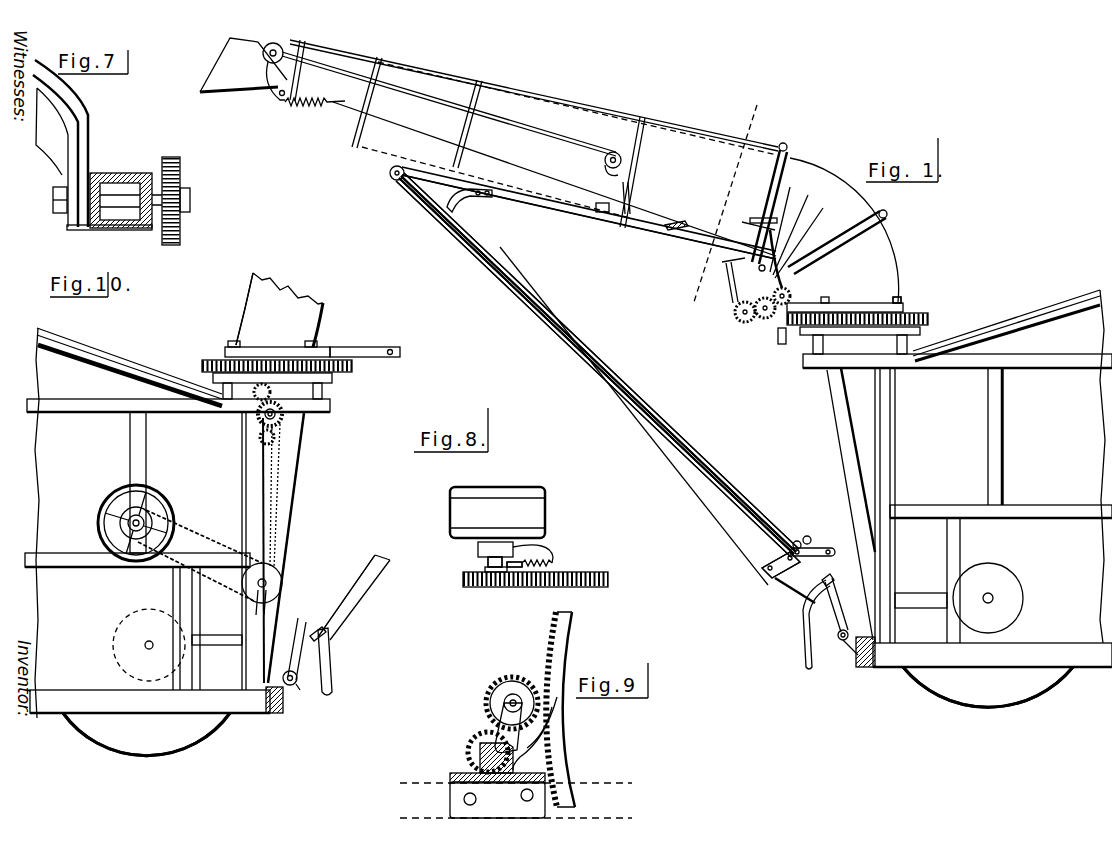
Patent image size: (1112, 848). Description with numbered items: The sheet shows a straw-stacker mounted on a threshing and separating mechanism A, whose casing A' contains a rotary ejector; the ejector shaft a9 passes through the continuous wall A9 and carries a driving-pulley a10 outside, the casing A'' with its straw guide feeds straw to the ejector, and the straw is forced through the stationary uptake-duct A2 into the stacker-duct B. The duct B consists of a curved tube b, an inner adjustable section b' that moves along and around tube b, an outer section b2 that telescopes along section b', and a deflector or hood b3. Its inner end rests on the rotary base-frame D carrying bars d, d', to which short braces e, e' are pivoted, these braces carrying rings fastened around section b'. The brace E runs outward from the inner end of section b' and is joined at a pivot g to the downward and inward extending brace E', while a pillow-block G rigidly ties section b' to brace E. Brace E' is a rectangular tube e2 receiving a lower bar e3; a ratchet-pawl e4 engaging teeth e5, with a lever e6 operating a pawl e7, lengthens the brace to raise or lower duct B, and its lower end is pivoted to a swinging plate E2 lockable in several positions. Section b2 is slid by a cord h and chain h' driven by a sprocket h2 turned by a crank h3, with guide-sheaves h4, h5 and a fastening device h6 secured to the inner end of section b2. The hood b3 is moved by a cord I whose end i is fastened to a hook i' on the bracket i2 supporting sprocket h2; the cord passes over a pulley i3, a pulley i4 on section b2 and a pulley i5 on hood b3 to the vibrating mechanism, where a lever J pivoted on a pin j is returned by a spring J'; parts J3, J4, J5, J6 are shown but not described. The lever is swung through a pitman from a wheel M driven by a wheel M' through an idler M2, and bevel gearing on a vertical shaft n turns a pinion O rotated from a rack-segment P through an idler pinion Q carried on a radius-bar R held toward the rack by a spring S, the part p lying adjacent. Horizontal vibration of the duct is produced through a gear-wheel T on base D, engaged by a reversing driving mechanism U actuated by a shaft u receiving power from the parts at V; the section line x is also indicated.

In FIG. 10, the threshing and separating mechanism A is at (167, 523).
In FIG. 1, the threshing and separating mechanism A is at (957, 454).
In FIG. 10, the ejector casing A' is at (146, 734).
In FIG. 1, the ejector casing A' is at (988, 700).
In FIG. 10, the casing A'' is at (150, 640).
In FIG. 1, the casing A'' is at (992, 553).
In FIG. 10, the uptake-duct A2 is at (296, 488).
In FIG. 1, the uptake-duct A2 is at (862, 472).
In FIG. 10, the continuous wall A9 is at (133, 740).
In FIG. 1, the continuous wall A9 is at (1033, 680).
In FIG. 1, the shaft a9 is at (994, 600).
In FIG. 1, the driving-pulley a10 is at (1024, 608).
In FIG. 10, the stacking tube or duct B is at (279, 298).
In FIG. 1, the stacking tube or duct B is at (640, 115).
In FIG. 10, the tube b is at (240, 307).
In FIG. 1, the tube b is at (850, 230).
In FIG. 1, the inner adjustable tube-section b' is at (782, 201).
In FIG. 1, the outer adjustable tube section b2 is at (560, 108).
In FIG. 1, the deflector or hood b3 is at (272, 75).
In FIG. 10, the rotary base-frame D is at (228, 346).
In FIG. 1, the rotary base-frame D is at (903, 293).
In FIG. 7, the base-frame bar d is at (107, 191).
In FIG. 1, the base-frame bar d is at (845, 298).
In FIG. 10, the base-frame bar d' is at (365, 343).
In FIG. 1, the bar or brace E is at (589, 213).
In FIG. 10, the brace-bar E' is at (354, 597).
In FIG. 1, the brace-bar E' is at (597, 365).
In FIG. 10, the swinging plate E2 is at (292, 706).
In FIG. 1, the swinging plate E2 is at (855, 668).
In FIG. 7, the brace e is at (52, 157).
In FIG. 1, the brace e is at (787, 259).
In FIG. 7, the brace e' is at (72, 143).
In FIG. 1, the brace e' is at (725, 280).
In FIG. 10, the upper tubular part e2 is at (346, 596).
In FIG. 1, the upper tubular part e2 is at (597, 370).
In FIG. 10, the lower member or bar e3 is at (304, 695).
In FIG. 1, the lower member or bar e3 is at (838, 644).
In FIG. 10, the ratchet-pawl e4 is at (318, 625).
In FIG. 1, the ratchet-pawl e4 is at (830, 574).
In FIG. 10, the ratchet-teeth e5 is at (285, 676).
In FIG. 1, the ratchet-teeth e5 is at (846, 628).
In FIG. 10, the lever e6 is at (330, 676).
In FIG. 1, the lever e6 is at (800, 645).
In FIG. 10, the pawl e7 is at (298, 634).
In FIG. 1, the pawl e7 is at (838, 598).
In FIG. 1, the pillow-block G is at (632, 198).
In FIG. 1, the pivot g is at (447, 210).
In FIG. 1, the cord h is at (595, 364).
In FIG. 1, the section of chain h' is at (593, 369).
In FIG. 1, the sprocket h2 is at (758, 568).
In FIG. 1, the crank h3 is at (826, 547).
In FIG. 1, the guide-sheave h4 is at (440, 188).
In FIG. 1, the guide-sheave h5 is at (690, 218).
In FIG. 1, the fastening device h6 is at (603, 201).
In FIG. 1, the cord I is at (508, 80).
In FIG. 1, the cord end i is at (793, 527).
In FIG. 1, the hook i' is at (805, 527).
In FIG. 1, the bracket i2 is at (788, 577).
In FIG. 1, the pulley i3 is at (390, 170).
In FIG. 1, the pulley i4 is at (610, 150).
In FIG. 1, the pulley i5 is at (274, 42).
In FIG. 1, the bar or lever J is at (754, 232).
In FIG. 1, the spring J' is at (837, 242).
In FIG. 1, the arm J3 is at (794, 227).
In FIG. 1, the arm J4 is at (803, 236).
In FIG. 1, the bracket J5 is at (755, 218).
In FIG. 1, the arm J6 is at (784, 222).
In FIG. 1, the short shaft or pin j is at (758, 266).
In FIG. 7, the wheel M is at (185, 201).
In FIG. 1, the wheel M is at (733, 321).
In FIG. 1, the wheel M' is at (794, 293).
In FIG. 1, the idler M2 is at (762, 318).
In FIG. 8, the vertical shaft n is at (488, 560).
In FIG. 8, the pinion O is at (497, 588).
In FIG. 9, the pinion O is at (472, 748).
In FIG. 1, the pinion O is at (780, 343).
In FIG. 10, the rack-segment P is at (332, 380).
In FIG. 8, the rack-segment P is at (535, 569).
In FIG. 9, the rack-segment P is at (562, 657).
In FIG. 1, the rack-segment P is at (928, 322).
In FIG. 1, the support plate p is at (870, 340).
In FIG. 8, the idler or driving-pinion Q is at (531, 588).
In FIG. 9, the idler or driving-pinion Q is at (495, 683).
In FIG. 8, the radius-bar R is at (480, 588).
In FIG. 9, the radius-bar R is at (508, 718).
In FIG. 8, the spring S is at (553, 553).
In FIG. 9, the spring S is at (560, 717).
In FIG. 10, the gear-wheel T is at (205, 362).
In FIG. 1, the gear-wheel T is at (922, 312).
In FIG. 10, the driving mechanism U is at (283, 411).
In FIG. 10, the shaft u is at (262, 420).
In FIG. 10, the power parts V is at (199, 550).
In FIG. 1, the section line x is at (721, 205).